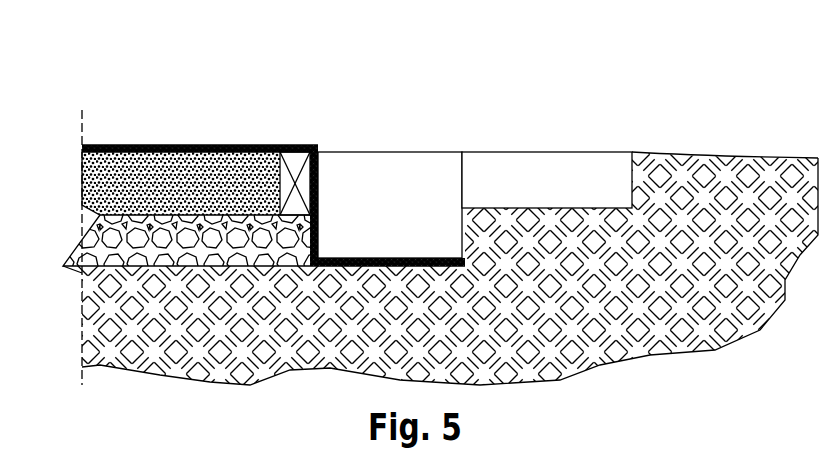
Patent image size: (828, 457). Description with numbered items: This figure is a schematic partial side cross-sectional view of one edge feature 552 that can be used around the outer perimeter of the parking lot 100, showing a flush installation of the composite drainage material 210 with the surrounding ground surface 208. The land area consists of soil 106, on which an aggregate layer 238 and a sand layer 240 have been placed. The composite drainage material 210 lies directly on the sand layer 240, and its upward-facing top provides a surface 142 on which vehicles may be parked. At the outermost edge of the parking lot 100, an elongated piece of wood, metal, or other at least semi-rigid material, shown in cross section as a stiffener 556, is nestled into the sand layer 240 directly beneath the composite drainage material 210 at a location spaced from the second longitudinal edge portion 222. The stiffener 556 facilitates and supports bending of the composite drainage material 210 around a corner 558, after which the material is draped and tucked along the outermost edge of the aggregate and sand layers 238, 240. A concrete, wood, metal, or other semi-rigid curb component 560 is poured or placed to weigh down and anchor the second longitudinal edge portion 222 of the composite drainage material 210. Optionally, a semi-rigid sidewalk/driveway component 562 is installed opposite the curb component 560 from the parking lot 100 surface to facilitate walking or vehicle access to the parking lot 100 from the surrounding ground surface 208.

The parking lot 100 is at (246, 155).
The soil 106 is at (218, 312).
The surface 142 is at (141, 146).
The ground surface 208 is at (705, 157).
The composite drainage material 210 is at (208, 146).
The second longitudinal edge portion 222 is at (466, 268).
The aggregate layer 238 is at (110, 250).
The sand layer 240 is at (115, 185).
The edge feature 552 is at (471, 218).
The stiffener 556 is at (299, 150).
The corner 558 is at (322, 151).
The curb component 560 is at (399, 225).
The sidewalk/driveway component 562 is at (572, 187).